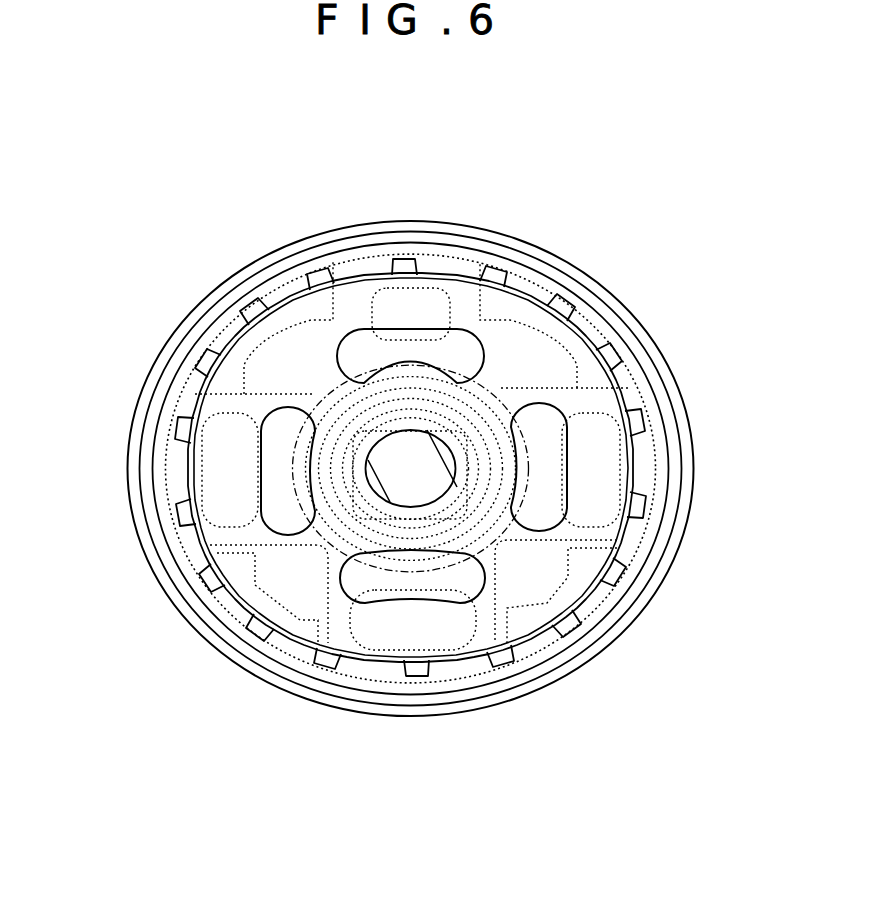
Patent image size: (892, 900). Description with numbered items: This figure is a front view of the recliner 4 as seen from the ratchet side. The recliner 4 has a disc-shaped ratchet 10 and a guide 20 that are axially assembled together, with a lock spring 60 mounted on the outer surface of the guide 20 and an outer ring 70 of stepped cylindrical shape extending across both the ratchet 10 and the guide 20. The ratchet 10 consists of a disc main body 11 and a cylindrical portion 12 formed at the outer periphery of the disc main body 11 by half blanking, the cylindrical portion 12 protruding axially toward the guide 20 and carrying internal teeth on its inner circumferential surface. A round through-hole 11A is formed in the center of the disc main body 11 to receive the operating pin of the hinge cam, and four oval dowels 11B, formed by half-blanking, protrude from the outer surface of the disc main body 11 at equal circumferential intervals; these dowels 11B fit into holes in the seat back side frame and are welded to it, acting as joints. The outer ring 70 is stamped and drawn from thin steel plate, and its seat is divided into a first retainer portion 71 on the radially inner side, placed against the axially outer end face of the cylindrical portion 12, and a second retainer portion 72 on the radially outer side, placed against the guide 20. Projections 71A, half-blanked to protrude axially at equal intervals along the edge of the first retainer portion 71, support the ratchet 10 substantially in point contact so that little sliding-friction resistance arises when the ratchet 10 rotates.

The recliner 4 is at (618, 162).
The ratchet 10 is at (313, 310).
The disc main body 11 is at (243, 368).
The through-hole 11A is at (375, 491).
The dowels 11B is at (363, 350).
The cylindrical portion 12 is at (458, 268).
The guide 20 is at (523, 275).
The lock spring 60 is at (497, 400).
The outer ring 70 is at (215, 641).
The first retainer portion 71 is at (289, 648).
The projections 71A is at (560, 622).
The second retainer portion 72 is at (182, 587).